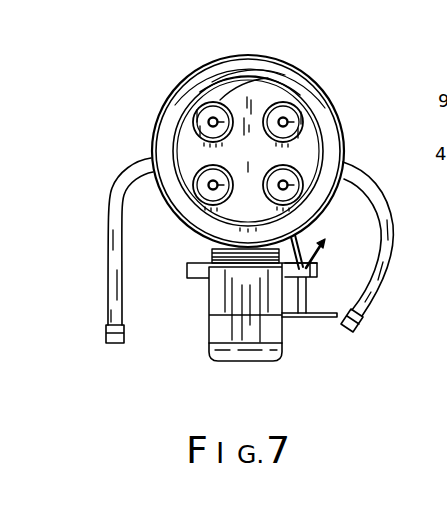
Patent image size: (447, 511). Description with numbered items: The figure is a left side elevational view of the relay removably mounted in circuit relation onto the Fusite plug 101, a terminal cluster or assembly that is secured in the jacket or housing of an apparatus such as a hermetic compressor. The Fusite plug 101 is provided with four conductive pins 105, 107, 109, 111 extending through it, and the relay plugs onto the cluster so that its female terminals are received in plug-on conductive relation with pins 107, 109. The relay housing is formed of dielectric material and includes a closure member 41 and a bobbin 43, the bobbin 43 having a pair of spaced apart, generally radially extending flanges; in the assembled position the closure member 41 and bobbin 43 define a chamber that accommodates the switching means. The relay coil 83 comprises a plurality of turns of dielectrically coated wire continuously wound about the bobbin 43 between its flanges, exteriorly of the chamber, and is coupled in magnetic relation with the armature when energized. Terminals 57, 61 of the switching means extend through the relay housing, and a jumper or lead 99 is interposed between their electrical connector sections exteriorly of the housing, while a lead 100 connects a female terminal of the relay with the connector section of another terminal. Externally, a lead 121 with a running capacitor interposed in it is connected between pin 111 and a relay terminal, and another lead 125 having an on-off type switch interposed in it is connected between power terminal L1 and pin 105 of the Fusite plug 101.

The Fusite plug 101 is at (205, 50).
The conductive pin 105 is at (212, 122).
The conductive pin 111 is at (285, 121).
The conductive pin 107 is at (219, 187).
The conductive pin 109 is at (295, 175).
The lead 121 is at (109, 240).
The lead 125 is at (394, 240).
The relay coil 83 is at (211, 253).
The bobbin 43 is at (210, 294).
The closure member 41 is at (210, 341).
The terminal 61 is at (303, 318).
The jumper lead 99 is at (305, 299).
The lead 100 is at (304, 250).
The terminal 57 is at (328, 251).